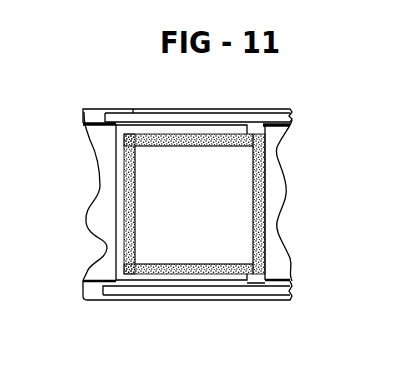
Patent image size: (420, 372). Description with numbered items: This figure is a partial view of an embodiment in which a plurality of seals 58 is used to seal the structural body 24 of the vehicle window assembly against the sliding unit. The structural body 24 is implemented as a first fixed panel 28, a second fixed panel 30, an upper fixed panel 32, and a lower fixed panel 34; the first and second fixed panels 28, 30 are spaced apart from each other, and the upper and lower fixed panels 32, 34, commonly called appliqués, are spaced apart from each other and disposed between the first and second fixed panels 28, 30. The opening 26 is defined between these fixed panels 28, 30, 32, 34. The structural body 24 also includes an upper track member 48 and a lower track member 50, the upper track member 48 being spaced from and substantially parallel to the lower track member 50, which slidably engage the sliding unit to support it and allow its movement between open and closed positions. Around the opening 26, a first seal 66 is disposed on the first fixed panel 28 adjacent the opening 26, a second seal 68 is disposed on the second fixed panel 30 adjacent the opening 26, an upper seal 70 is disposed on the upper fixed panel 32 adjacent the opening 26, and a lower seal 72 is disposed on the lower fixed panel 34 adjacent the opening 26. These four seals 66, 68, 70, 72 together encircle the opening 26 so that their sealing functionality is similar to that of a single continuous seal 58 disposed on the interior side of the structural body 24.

The structural body 24 is at (117, 104).
The upper track member 48 is at (147, 112).
The upper fixed panel 32 is at (190, 110).
The upper seal 70 is at (215, 125).
The seal 58 is at (270, 142).
The first seal 66 is at (265, 183).
The second seal 68 is at (120, 198).
The first fixed panel 28 is at (277, 222).
The opening 26 is at (168, 246).
The lower fixed panel 34 is at (152, 283).
The lower seal 72 is at (188, 277).
The lower track member 50 is at (232, 293).
The second fixed panel 30 is at (95, 294).